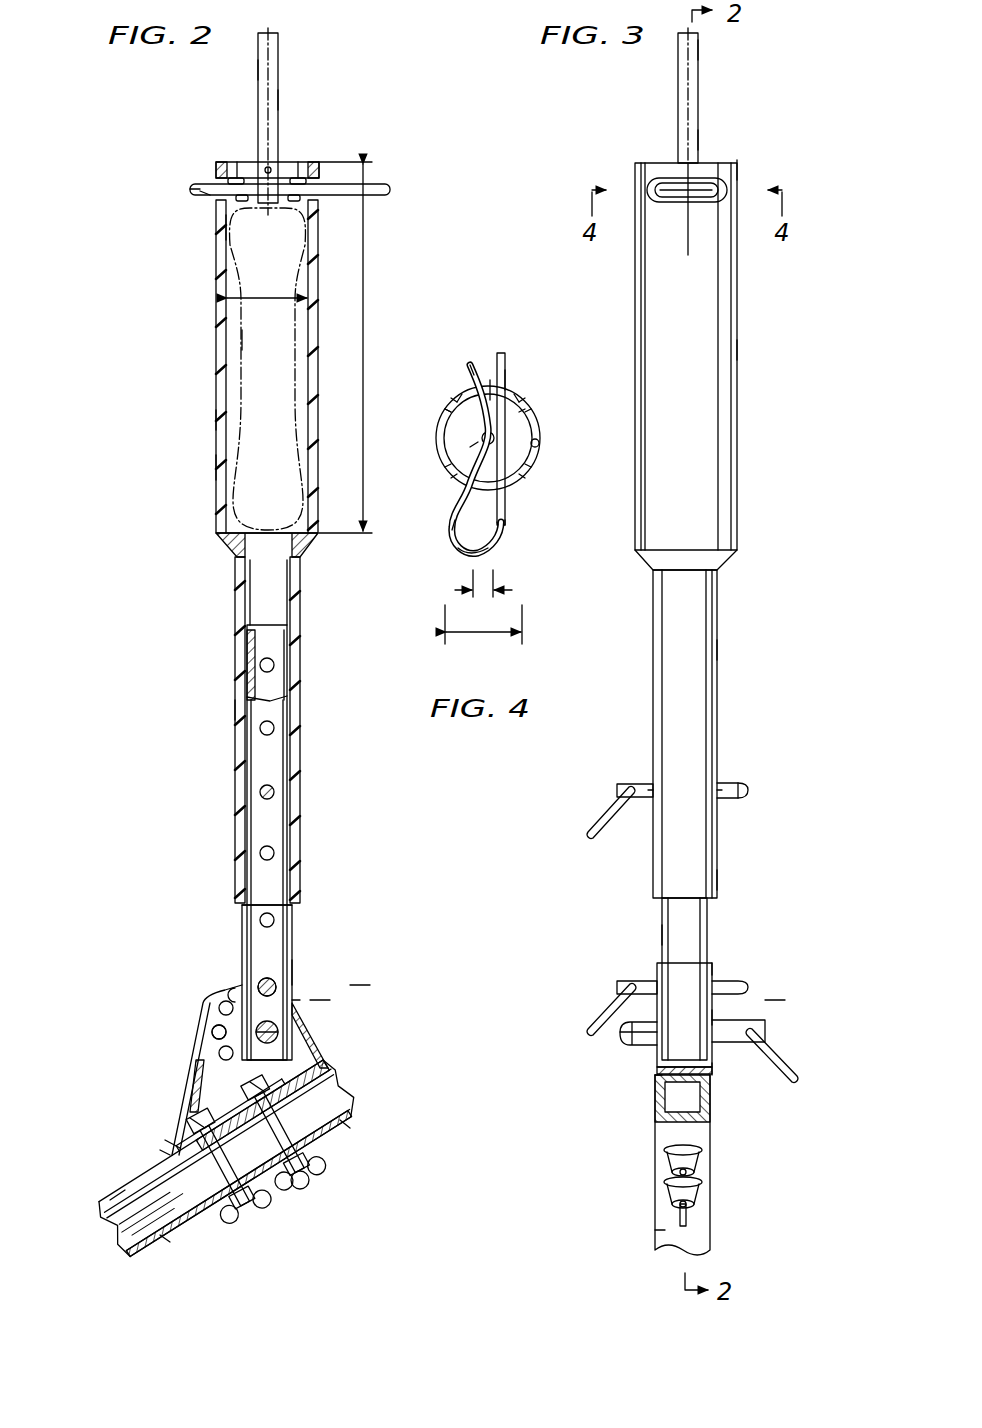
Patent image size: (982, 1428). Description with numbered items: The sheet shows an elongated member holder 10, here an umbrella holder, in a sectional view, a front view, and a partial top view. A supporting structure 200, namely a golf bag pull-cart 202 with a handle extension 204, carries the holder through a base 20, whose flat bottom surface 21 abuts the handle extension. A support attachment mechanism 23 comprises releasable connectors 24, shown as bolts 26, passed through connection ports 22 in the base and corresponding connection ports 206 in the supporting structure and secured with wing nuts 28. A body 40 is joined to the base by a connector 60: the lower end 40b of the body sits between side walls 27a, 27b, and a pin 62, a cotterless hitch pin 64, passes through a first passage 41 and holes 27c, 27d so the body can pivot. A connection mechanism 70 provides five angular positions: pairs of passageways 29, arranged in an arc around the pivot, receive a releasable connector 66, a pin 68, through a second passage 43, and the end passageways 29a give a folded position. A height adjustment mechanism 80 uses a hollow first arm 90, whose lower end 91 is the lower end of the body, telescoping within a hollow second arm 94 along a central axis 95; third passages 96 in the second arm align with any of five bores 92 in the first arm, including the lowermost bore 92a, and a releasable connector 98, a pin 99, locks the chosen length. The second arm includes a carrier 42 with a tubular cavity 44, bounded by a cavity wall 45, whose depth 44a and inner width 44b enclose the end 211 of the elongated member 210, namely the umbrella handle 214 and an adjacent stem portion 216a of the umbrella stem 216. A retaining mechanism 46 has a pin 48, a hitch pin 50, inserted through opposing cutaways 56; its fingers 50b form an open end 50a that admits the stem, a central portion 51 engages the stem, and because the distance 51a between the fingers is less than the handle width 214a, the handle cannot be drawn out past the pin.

In FIG. 2, the elongated member holder 10 is at (126, 424).
In FIG. 3, the elongated member holder 10 is at (808, 162).
In FIG. 2, the base 20 is at (300, 1030).
In FIG. 3, the base 20 is at (653, 1078).
In FIG. 2, the flat bottom surface 21 is at (256, 70).
In FIG. 2, the connection ports 22 is at (172, 1144).
In FIG. 2, the support attachment mechanism 23 is at (122, 1180).
In FIG. 2, the releasable connector 24 is at (236, 1098).
In FIG. 3, the releasable connector 24 is at (704, 1190).
In FIG. 2, the bolt 26 is at (268, 1088).
In FIG. 3, the side wall 27a is at (655, 1070).
In FIG. 2, the side wall 27b is at (200, 1062).
In FIG. 3, the side wall 27b is at (713, 1070).
In FIG. 3, the hole 27c is at (640, 1032).
In FIG. 3, the hole 27d is at (718, 1018).
In FIG. 2, the wing nut 28 is at (308, 1185).
In FIG. 3, the wing nut 28 is at (668, 1190).
In FIG. 2, the passageways 29 is at (228, 1000).
In FIG. 2, the end passageways 29a is at (214, 1034).
In FIG. 2, the body 40 is at (162, 469).
In FIG. 3, the body 40 is at (754, 350).
In FIG. 2, the lower end 40b is at (297, 978).
In FIG. 3, the lower end 40b is at (735, 887).
In FIG. 2, the first passage 41 is at (256, 1030).
In FIG. 2, the carrier 42 is at (218, 492).
In FIG. 4, the carrier 42 is at (514, 502).
In FIG. 3, the carrier 42 is at (740, 446).
In FIG. 2, the second passage 43 is at (274, 982).
In FIG. 2, the cavity 44 is at (284, 164).
In FIG. 4, the cavity 44 is at (490, 388).
In FIG. 2, the depth 44a is at (220, 168).
In FIG. 2, the inner width 44b is at (265, 300).
In FIG. 2, the cavity wall 45 is at (226, 230).
In FIG. 4, the cavity wall 45 is at (540, 444).
In FIG. 2, the retaining mechanism 46 is at (198, 187).
In FIG. 4, the retaining mechanism 46 is at (504, 353).
In FIG. 2, the pin 48 is at (188, 191).
In FIG. 4, the pin 48 is at (494, 548).
In FIG. 3, the pin 48 is at (668, 186).
In FIG. 2, the hitch pin 50 is at (200, 196).
In FIG. 4, the hitch pin 50 is at (508, 378).
In FIG. 4, the open end 50a is at (469, 360).
In FIG. 4, the fingers 50b is at (465, 390).
In FIG. 4, the central portion 51 is at (466, 441).
In FIG. 4, the distance 51a is at (495, 594).
In FIG. 2, the cutaways 56 is at (236, 178).
In FIG. 4, the cutaways 56 is at (512, 404).
In FIG. 2, the connector 60 is at (376, 978).
In FIG. 3, the connector 60 is at (795, 1002).
In FIG. 2, the pin 62 is at (295, 1003).
In FIG. 3, the pin 62 is at (795, 1051).
In FIG. 3, the cotterless hitch pin 64 is at (767, 1031).
In FIG. 2, the releasable connector 66 is at (243, 955).
In FIG. 3, the releasable connector 66 is at (621, 976).
In FIG. 2, the pin 68 is at (276, 978).
In FIG. 3, the pin 68 is at (617, 987).
In FIG. 2, the connection mechanism 70 is at (205, 989).
In FIG. 3, the connection mechanism 70 is at (735, 962).
In FIG. 2, the height adjustment mechanism 80 is at (224, 708).
In FIG. 3, the height adjustment mechanism 80 is at (745, 646).
In FIG. 2, the first arm 90 is at (286, 730).
In FIG. 3, the first arm 90 is at (662, 912).
In FIG. 2, the lower end 91 is at (332, 992).
In FIG. 3, the lower end 91 is at (648, 932).
In FIG. 2, the bores 92 is at (272, 725).
In FIG. 2, the lowermost bore 92a is at (243, 904).
In FIG. 2, the second arm 94 is at (238, 592).
In FIG. 3, the second arm 94 is at (720, 606).
In FIG. 3, the central axis 95 is at (700, 50).
In FIG. 3, the third passages 96 is at (650, 782).
In FIG. 2, the releasable connector 98 is at (273, 789).
In FIG. 3, the releasable connector 98 is at (618, 790).
In FIG. 3, the pin 99 is at (750, 790).
In FIG. 2, the supporting structure 200 is at (152, 1252).
In FIG. 3, the supporting structure 200 is at (648, 1158).
In FIG. 2, the golf bag pull-cart 202 is at (347, 1132).
In FIG. 3, the golf bag pull-cart 202 is at (652, 1238).
In FIG. 2, the handle extension 204 is at (165, 1236).
In FIG. 3, the handle extension 204 is at (712, 1108).
In FIG. 2, the connection ports 206 is at (332, 1084).
In FIG. 2, the elongated member 210 is at (282, 68).
In FIG. 3, the elongated member 210 is at (703, 100).
In FIG. 2, the end 211 is at (240, 342).
In FIG. 3, the end 211 is at (710, 140).
In FIG. 2, the umbrella handle 214 is at (262, 380).
In FIG. 4, the umbrella handle 214 is at (460, 430).
In FIG. 4, the width 214a is at (497, 633).
In FIG. 2, the umbrella stem 216 is at (279, 100).
In FIG. 2, the stem portion 216a is at (264, 168).
In FIG. 4, the stem portion 216a is at (495, 435).